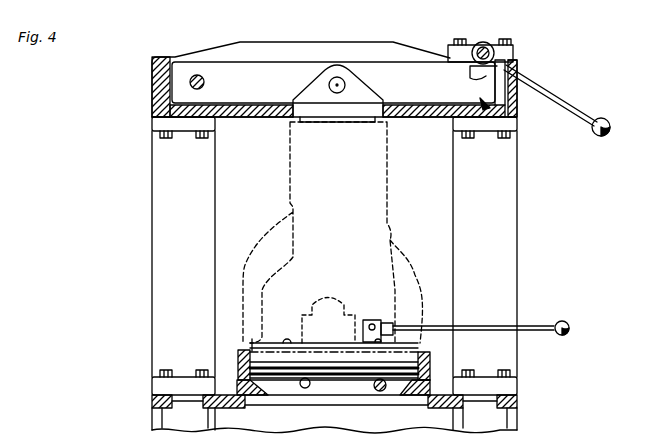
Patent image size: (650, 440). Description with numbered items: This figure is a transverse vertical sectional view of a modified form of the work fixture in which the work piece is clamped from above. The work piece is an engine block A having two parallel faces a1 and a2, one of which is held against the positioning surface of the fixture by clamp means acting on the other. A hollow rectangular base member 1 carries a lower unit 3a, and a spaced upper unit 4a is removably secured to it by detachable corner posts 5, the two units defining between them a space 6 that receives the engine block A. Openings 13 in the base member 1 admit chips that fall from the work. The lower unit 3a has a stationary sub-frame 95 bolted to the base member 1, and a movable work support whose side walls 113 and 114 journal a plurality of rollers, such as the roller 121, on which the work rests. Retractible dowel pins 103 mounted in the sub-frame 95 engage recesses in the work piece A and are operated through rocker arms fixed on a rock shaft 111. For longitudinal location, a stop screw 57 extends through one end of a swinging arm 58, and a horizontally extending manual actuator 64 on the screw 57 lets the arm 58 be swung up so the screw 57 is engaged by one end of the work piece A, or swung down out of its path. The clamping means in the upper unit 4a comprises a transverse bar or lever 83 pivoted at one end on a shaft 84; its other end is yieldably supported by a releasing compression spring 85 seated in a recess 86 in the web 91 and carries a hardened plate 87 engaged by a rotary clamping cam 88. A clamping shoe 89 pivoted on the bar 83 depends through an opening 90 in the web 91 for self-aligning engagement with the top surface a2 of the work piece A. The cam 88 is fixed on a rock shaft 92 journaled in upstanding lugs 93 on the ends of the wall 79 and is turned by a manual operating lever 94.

The base member 1 is at (150, 397).
The unit 3a is at (263, 392).
The unit 4a is at (291, 40).
The corner posts 5 is at (151, 256).
The space 6 is at (445, 271).
The openings 13 is at (342, 397).
The stop screw 57 is at (386, 322).
The arm 58 is at (367, 320).
The manual actuator 64 is at (548, 317).
The wall 79 is at (512, 92).
The bar or lever 83 is at (405, 58).
The shaft or rod 84 is at (204, 82).
The releasing compression spring 85 is at (480, 100).
The recess 86 is at (495, 127).
The hardened plate 87 is at (470, 74).
The rotary clamping cam or eccentric 88 is at (486, 44).
The clamping shoe 89 is at (312, 125).
The opening 90 is at (293, 112).
The web 91 is at (440, 118).
The rock shaft 92 is at (478, 42).
The upstanding lugs 93 is at (506, 62).
The manual operating lever 94 is at (590, 124).
The sub-frame 95 is at (420, 388).
The dowel pins 103 is at (289, 339).
The rock shaft 111 is at (310, 383).
The side wall 113 is at (430, 362).
The side wall 114 is at (238, 358).
The roller 121 is at (250, 344).
The engine block A is at (388, 190).
The face a1 is at (308, 343).
The face a2 is at (388, 127).